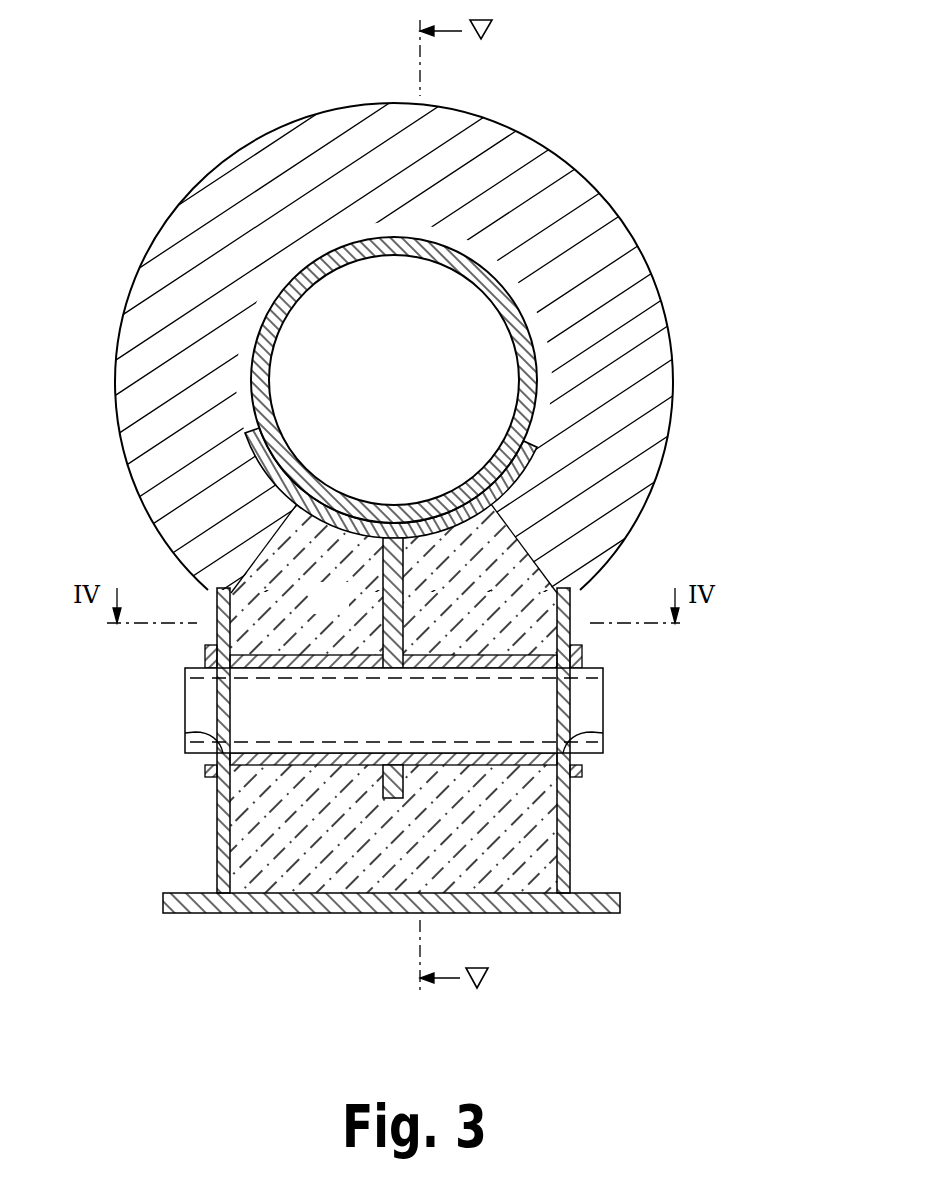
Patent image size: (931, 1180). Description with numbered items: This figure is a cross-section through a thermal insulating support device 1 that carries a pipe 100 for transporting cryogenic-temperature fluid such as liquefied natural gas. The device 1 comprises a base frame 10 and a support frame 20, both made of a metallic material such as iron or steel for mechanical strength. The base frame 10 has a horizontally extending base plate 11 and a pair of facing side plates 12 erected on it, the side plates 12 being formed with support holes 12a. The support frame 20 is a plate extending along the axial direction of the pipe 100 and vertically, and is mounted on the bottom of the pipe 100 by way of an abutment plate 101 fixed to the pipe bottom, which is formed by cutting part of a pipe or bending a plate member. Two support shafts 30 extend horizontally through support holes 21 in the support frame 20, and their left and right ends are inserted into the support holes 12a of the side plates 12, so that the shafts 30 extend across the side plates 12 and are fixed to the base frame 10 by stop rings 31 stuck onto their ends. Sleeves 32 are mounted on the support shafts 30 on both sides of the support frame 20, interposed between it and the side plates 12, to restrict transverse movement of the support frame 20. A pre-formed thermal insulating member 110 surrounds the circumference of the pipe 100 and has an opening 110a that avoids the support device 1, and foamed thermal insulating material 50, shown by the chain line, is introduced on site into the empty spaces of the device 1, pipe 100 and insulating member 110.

The thermal insulating support device 1 is at (459, 743).
The base frame 10 is at (413, 756).
The base plate 11 is at (170, 907).
The side plates 12 is at (215, 838).
The support holes 12a is at (185, 740).
The support frame 20 is at (405, 607).
The support holes 21 is at (394, 753).
The support shafts 30 is at (472, 723).
The stop rings 31 is at (205, 657).
The sleeves 32 is at (315, 770).
The foamed thermal insulating material 50 is at (346, 609).
The pipe 100 is at (553, 367).
The abutment plate 101 is at (535, 449).
The thermal insulating member 110 is at (232, 193).
The opening 110a is at (292, 514).